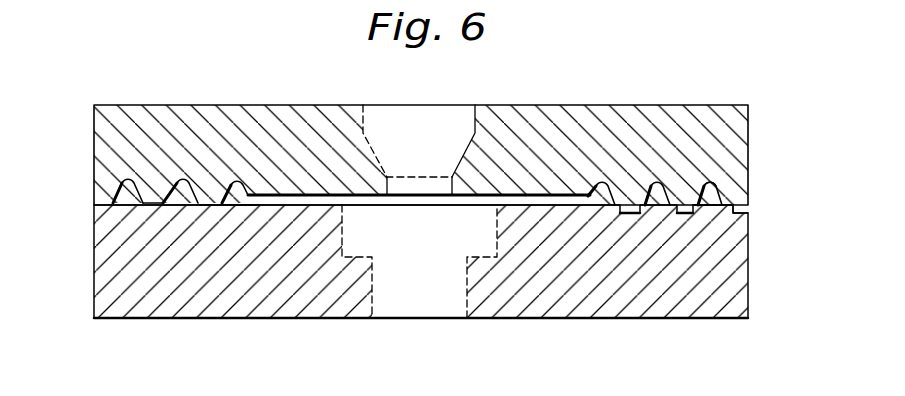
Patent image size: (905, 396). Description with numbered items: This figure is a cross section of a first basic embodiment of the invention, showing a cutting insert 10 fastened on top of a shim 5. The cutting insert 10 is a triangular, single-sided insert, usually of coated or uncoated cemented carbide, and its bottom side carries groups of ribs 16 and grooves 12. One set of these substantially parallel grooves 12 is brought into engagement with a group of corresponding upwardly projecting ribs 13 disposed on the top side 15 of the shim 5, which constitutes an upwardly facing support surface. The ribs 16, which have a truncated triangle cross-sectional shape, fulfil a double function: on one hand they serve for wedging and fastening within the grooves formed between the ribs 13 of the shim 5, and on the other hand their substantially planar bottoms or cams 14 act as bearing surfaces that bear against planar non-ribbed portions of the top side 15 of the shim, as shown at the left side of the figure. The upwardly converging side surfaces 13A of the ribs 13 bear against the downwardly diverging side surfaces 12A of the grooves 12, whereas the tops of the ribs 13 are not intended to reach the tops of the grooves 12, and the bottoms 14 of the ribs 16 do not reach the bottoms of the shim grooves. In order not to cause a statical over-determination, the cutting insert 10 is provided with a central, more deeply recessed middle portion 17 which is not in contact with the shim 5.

The shim 5 is at (297, 275).
The cutting insert 10 is at (545, 153).
The grooves 12 is at (652, 180).
The downwardly diverging side surfaces of the grooves 12A is at (698, 190).
The ribs 13 is at (705, 197).
The upwardly converging side surfaces of the ribs 13A is at (716, 192).
The cams 14 is at (683, 208).
The top side of the shim 15 is at (237, 205).
The ribs 16 is at (208, 192).
The recessed middle portion 17 is at (296, 194).